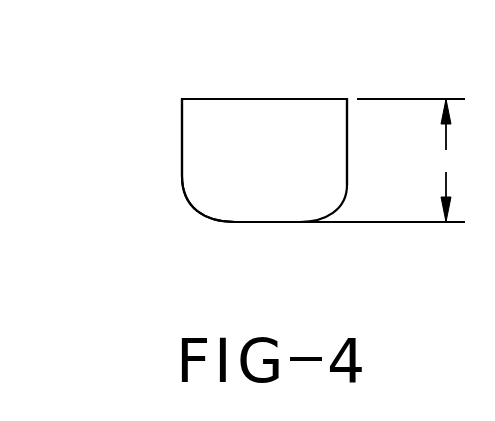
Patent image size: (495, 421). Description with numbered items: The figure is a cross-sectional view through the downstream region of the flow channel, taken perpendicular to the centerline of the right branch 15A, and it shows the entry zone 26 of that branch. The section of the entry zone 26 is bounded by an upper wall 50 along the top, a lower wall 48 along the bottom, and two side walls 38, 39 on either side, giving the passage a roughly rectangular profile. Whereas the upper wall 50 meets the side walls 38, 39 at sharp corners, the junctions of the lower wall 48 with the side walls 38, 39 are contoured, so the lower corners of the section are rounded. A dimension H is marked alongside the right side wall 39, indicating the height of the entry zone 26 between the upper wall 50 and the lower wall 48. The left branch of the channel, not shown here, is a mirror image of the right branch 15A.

The entry zone 26 is at (289, 169).
The upper wall 50 is at (210, 99).
The side wall 38 is at (181, 150).
The side wall 39 is at (350, 121).
The lower wall 48 is at (240, 222).
The right branch 15A is at (293, 208).
The groove height H is at (382, 160).